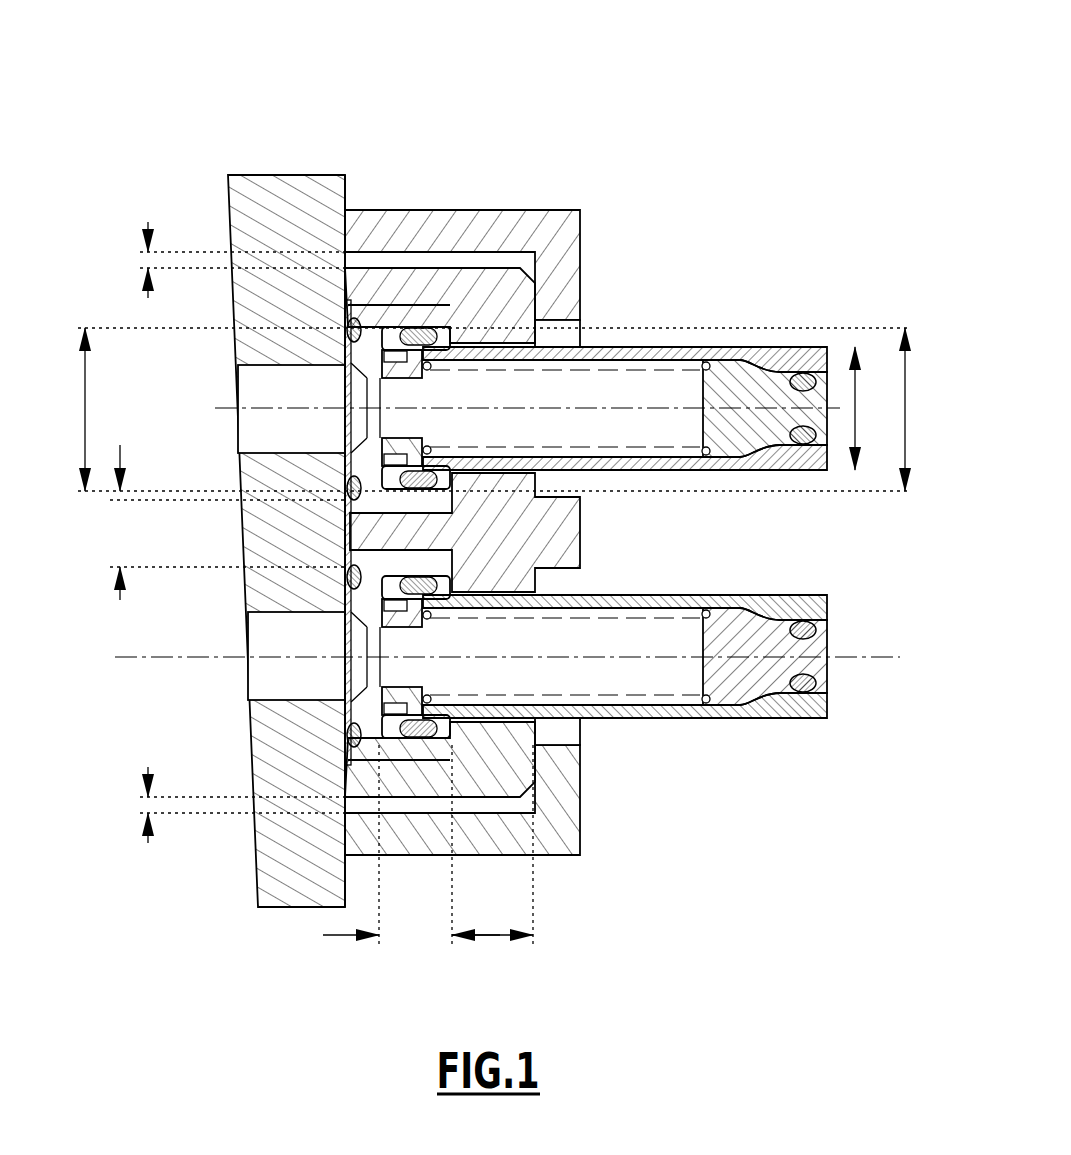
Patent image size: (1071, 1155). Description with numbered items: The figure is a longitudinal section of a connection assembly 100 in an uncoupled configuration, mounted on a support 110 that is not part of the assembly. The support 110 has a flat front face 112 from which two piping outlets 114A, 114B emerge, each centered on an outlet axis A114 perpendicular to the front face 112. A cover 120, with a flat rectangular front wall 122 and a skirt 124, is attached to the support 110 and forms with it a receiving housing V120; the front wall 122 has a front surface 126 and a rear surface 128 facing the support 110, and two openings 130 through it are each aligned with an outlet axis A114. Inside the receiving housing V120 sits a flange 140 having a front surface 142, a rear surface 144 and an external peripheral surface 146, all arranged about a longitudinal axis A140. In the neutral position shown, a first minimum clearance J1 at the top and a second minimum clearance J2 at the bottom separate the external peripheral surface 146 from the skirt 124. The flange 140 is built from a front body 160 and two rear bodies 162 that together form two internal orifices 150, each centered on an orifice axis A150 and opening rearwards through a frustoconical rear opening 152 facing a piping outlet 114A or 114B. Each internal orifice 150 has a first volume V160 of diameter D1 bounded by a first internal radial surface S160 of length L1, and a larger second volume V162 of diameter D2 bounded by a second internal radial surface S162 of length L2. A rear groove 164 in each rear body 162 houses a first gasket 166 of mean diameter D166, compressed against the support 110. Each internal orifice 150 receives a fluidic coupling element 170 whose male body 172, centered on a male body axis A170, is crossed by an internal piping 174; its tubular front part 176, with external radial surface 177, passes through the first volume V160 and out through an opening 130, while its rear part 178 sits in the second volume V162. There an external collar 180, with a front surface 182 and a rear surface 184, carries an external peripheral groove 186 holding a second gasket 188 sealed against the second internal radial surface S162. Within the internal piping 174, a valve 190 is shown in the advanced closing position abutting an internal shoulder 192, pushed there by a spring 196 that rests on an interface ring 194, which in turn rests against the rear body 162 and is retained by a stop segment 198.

The connection assembly 100 is at (712, 100).
The support 110 is at (224, 504).
The front face 112 is at (352, 172).
The piping outlet 114A is at (278, 383).
The piping outlet 114B is at (262, 685).
The cover 120 is at (562, 222).
The front wall 122 is at (557, 780).
The skirt 124 is at (410, 835).
The front surface 126 is at (587, 256).
The rear surface 128 is at (348, 323).
The opening 130 is at (556, 333).
The flange 140 is at (393, 152).
The front surface 142 is at (545, 740).
The rear surface 144 is at (343, 715).
The external peripheral surface 146 is at (498, 800).
The internal orifice 150 is at (392, 400).
The rear opening 152 is at (358, 420).
The front body 160 is at (470, 285).
The rear body 162 is at (415, 326).
The rear groove 164 is at (345, 582).
The first gasket 166 is at (348, 568).
The fluidic coupling element 170 is at (823, 595).
The male body 172 is at (797, 450).
The internal piping 174 is at (727, 425).
The tubular front part 176 is at (482, 560).
The external radial surface 177 is at (522, 490).
The rear part 178 is at (450, 530).
The external collar 180 is at (470, 712).
The front surface 182 is at (508, 292).
The rear surface 184 is at (388, 352).
The external peripheral groove 186 is at (420, 735).
The second gasket 188 is at (413, 478).
The valve 190 is at (743, 720).
The internal shoulder 192 is at (801, 720).
The interface ring 194 is at (408, 702).
The spring 196 is at (692, 720).
The stop segment 198 is at (393, 742).
The outlet axis A114 is at (480, 532).
The longitudinal axis A140 is at (862, 637).
The orifice axis A150 is at (923, 655).
The male body axis A170 is at (862, 677).
The diameter D1 is at (868, 408).
The diameter D2 is at (924, 409).
The mean diameter D166 is at (55, 409).
The first minimum clearance J1 is at (123, 260).
The second minimum clearance J2 is at (123, 805).
The length L1 is at (492, 959).
The length L2 is at (411, 959).
The first internal radial surface S160 is at (500, 597).
The second internal radial surface S162 is at (440, 578).
The receiving housing V120 is at (500, 258).
The first volume V160 is at (455, 663).
The second volume V162 is at (378, 625).